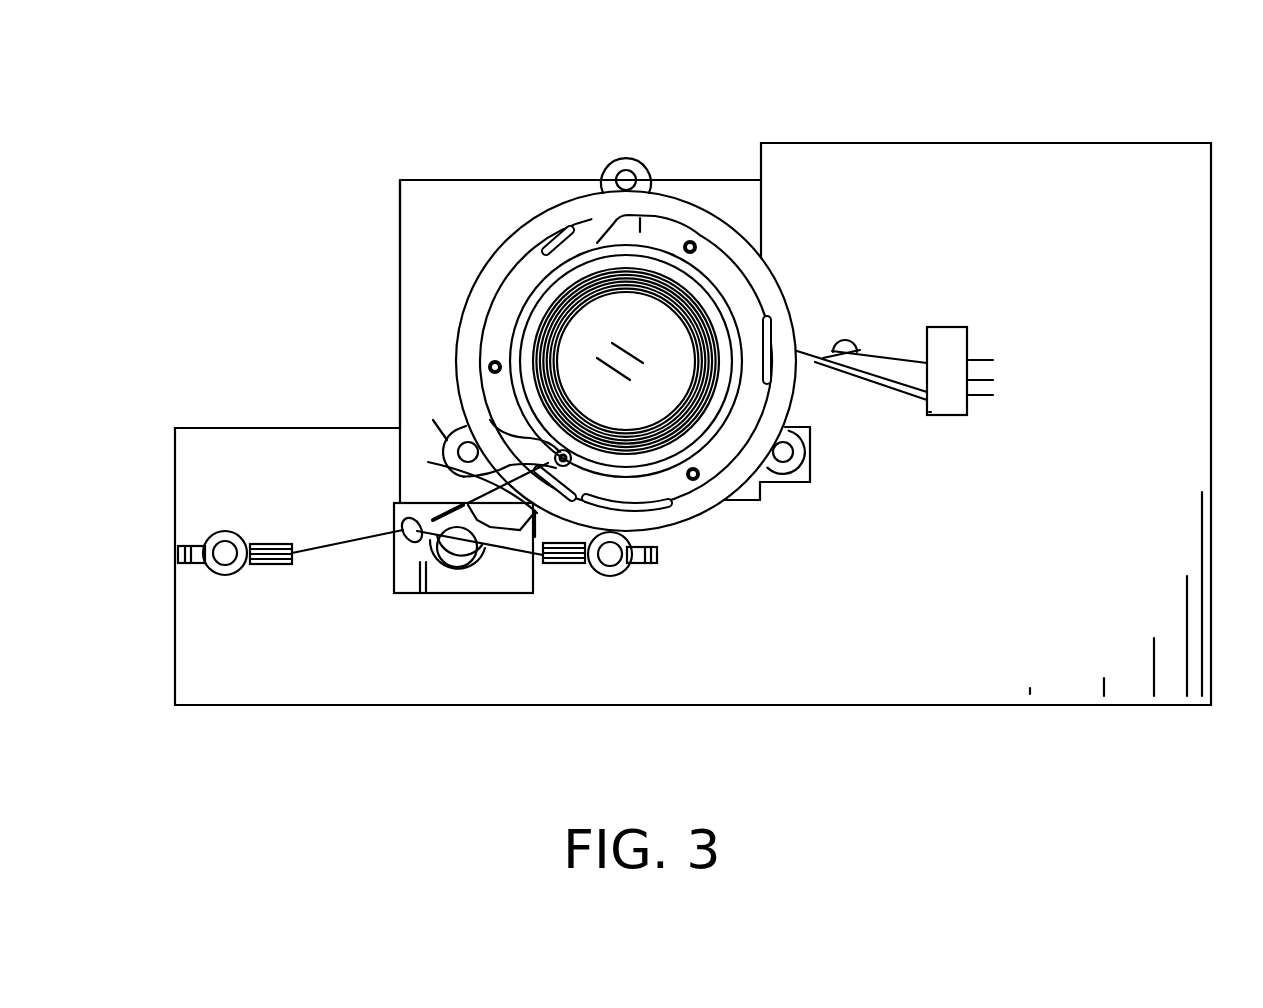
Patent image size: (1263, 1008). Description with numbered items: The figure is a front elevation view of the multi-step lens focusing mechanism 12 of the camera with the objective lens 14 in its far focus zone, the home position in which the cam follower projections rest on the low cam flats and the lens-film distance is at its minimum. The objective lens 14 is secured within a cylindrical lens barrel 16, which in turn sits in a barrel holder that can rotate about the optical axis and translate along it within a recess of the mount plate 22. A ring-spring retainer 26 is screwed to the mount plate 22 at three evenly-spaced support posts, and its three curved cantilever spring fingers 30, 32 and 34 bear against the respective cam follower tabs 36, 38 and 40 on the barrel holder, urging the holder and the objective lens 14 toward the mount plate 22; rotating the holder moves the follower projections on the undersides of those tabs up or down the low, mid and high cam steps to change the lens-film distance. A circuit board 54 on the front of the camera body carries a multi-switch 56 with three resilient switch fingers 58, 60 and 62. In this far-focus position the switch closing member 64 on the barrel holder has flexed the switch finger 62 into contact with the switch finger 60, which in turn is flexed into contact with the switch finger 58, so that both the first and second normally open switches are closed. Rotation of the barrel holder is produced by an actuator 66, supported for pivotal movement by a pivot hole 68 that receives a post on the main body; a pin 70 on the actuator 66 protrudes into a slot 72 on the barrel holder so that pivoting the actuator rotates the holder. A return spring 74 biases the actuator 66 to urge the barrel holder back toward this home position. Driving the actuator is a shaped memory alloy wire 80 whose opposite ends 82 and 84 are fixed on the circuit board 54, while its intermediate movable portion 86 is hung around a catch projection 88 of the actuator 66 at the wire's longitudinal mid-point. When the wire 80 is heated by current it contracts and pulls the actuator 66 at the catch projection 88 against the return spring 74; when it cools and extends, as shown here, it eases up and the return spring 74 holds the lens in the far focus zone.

The multi-step lens focusing mechanism 12 is at (1112, 108).
The objective lens 14 is at (625, 347).
The lens barrel 16 is at (552, 272).
The mount plate 22 is at (440, 180).
The ring-spring retainer 26 is at (538, 220).
The cantilever spring finger 30 is at (740, 290).
The cantilever spring finger 32 is at (508, 300).
The cantilever spring finger 34 is at (672, 490).
The cam follower tab 36 is at (640, 218).
The cam follower tab 38 is at (490, 365).
The cam follower tab 40 is at (730, 455).
The circuit board 54 is at (805, 697).
The multi-switch 56 is at (965, 325).
The switch finger 58 is at (868, 352).
The switch finger 60 is at (850, 350).
The switch finger 62 is at (930, 412).
The switch closing member 64 is at (785, 370).
The actuator 66 is at (485, 562).
The pivot hole 68 is at (432, 593).
The pin 70 is at (463, 477).
The slot 72 is at (480, 463).
The return spring 74 is at (465, 578).
The shaped memory alloy wire 80 is at (333, 565).
The wire end 82 is at (262, 572).
The wire end 84 is at (592, 578).
The intermediate movable portion 86 is at (320, 528).
The catch projection 88 is at (405, 520).